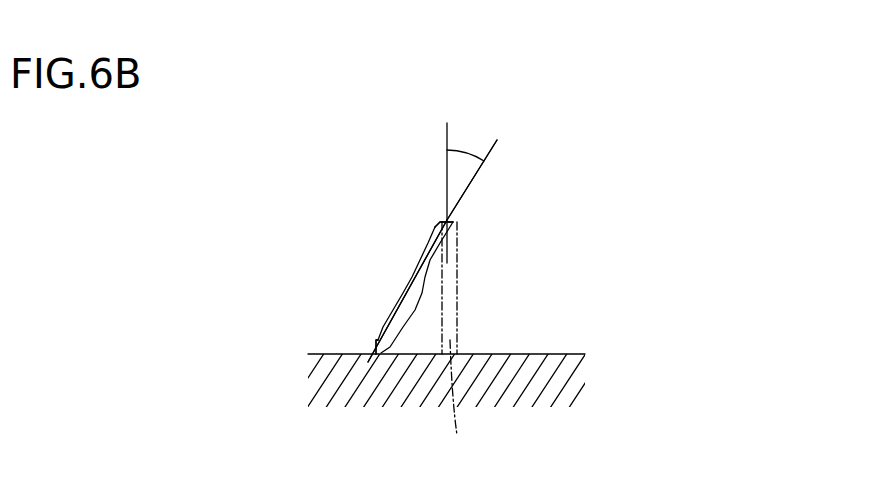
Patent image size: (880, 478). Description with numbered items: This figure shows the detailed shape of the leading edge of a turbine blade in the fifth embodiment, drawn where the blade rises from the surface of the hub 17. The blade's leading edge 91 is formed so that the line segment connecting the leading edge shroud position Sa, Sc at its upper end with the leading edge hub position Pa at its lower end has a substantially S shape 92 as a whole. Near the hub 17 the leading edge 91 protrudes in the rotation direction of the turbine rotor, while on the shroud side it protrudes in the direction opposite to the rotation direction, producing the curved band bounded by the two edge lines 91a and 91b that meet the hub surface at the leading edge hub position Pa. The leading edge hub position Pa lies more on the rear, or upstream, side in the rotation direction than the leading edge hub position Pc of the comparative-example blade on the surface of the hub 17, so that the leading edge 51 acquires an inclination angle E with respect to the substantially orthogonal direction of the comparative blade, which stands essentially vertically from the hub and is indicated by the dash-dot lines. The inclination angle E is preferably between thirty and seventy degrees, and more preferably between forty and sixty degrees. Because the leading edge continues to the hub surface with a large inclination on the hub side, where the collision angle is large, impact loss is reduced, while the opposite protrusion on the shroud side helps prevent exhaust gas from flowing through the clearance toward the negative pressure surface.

The hub 17 is at (547, 362).
The leading edge 91 is at (429, 288).
The outer surface of wiper blade 91a is at (415, 260).
The inner surface of wiper blade 91b is at (421, 313).
The substantially S shape 92 is at (417, 228).
The inclination angle E is at (465, 193).
The leading edge shroud position Sa is at (458, 219).
The leading edge shroud position Sc is at (432, 251).
The leading edge 51 is at (457, 286).
The leading edge hub position Pa is at (374, 346).
The leading edge hub position Pc is at (455, 401).